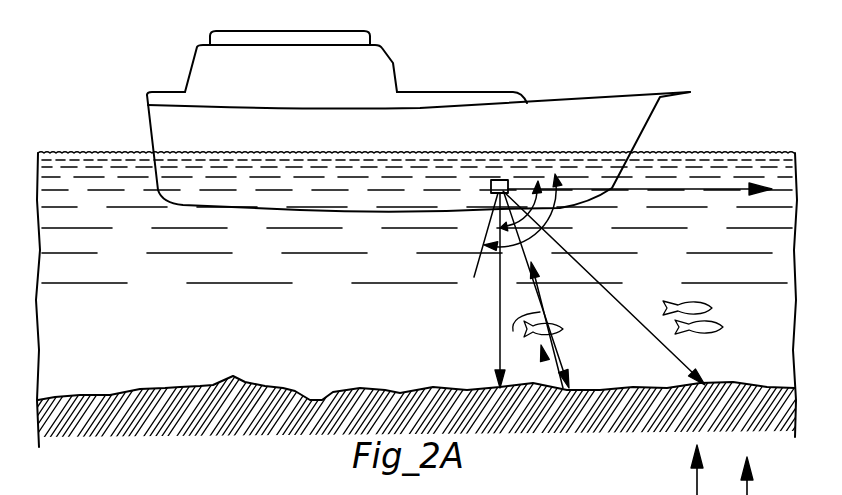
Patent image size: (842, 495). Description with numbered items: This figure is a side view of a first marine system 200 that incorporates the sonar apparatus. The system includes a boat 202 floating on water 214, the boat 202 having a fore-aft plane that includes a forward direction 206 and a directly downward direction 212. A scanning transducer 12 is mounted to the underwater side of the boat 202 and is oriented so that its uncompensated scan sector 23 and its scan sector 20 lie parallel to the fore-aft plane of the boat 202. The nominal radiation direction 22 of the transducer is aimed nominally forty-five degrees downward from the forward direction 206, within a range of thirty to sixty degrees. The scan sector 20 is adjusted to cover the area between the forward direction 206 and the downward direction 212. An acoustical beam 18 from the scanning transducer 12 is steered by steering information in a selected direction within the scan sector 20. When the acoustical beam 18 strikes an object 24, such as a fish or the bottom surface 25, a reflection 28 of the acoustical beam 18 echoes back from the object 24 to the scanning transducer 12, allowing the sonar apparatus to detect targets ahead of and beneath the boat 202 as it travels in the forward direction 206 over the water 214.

The scanning transducer 12 is at (500, 179).
The acoustical beam 18 is at (553, 358).
The scan sector 20 is at (486, 222).
The nominal radiation direction 22 is at (593, 273).
The uncompensated scan sector 23 is at (545, 237).
The object 24 is at (676, 328).
The bottom surface 25 is at (287, 390).
The reflection 28 is at (541, 352).
The first marine system 200 is at (232, 437).
The boat 202 is at (394, 71).
The forward direction 206 is at (694, 188).
The directly downward direction 212 is at (497, 328).
The water 214 is at (217, 337).